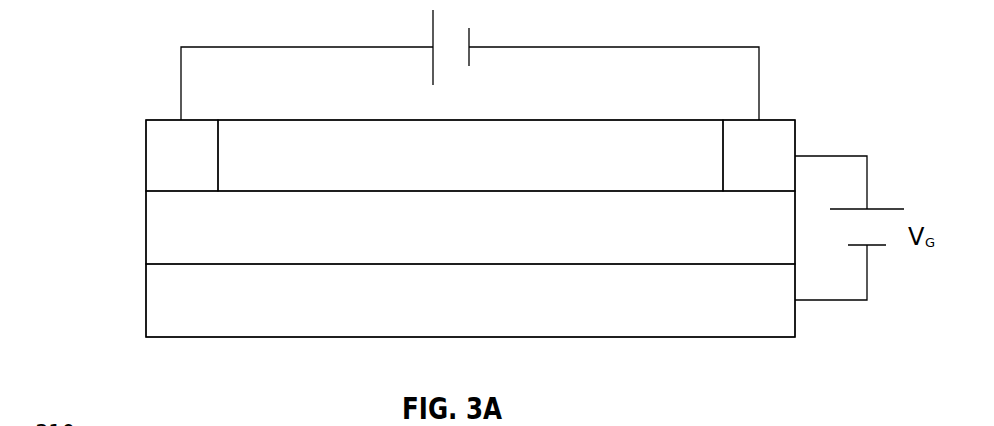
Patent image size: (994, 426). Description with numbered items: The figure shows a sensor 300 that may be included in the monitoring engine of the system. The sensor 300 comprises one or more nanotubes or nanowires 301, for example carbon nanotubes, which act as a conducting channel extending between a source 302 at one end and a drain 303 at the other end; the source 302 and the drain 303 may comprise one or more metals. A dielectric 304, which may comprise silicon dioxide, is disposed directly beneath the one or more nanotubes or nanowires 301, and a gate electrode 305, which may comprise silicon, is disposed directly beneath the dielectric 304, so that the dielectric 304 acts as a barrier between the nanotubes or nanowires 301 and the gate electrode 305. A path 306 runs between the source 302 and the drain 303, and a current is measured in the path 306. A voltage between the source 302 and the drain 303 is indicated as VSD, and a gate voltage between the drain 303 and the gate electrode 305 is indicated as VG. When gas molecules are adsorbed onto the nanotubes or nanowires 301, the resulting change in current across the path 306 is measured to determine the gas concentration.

The sensor 300 is at (86, 59).
The nanotubes or nanowires 301 is at (473, 166).
The source 302 is at (203, 166).
The drain 303 is at (781, 166).
The dielectric 304 is at (481, 239).
The gate electrode 305 is at (499, 311).
The path 306 is at (601, 78).